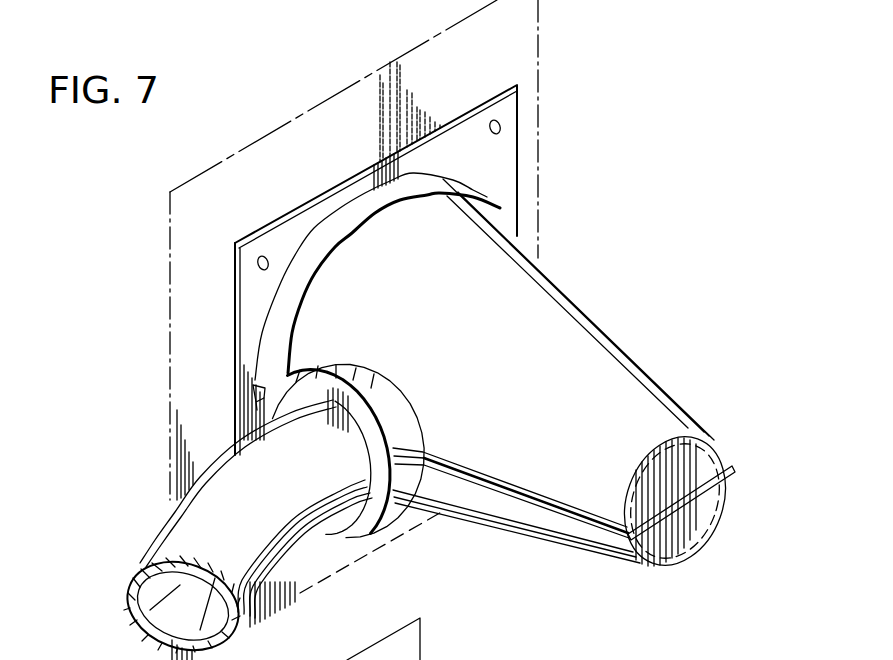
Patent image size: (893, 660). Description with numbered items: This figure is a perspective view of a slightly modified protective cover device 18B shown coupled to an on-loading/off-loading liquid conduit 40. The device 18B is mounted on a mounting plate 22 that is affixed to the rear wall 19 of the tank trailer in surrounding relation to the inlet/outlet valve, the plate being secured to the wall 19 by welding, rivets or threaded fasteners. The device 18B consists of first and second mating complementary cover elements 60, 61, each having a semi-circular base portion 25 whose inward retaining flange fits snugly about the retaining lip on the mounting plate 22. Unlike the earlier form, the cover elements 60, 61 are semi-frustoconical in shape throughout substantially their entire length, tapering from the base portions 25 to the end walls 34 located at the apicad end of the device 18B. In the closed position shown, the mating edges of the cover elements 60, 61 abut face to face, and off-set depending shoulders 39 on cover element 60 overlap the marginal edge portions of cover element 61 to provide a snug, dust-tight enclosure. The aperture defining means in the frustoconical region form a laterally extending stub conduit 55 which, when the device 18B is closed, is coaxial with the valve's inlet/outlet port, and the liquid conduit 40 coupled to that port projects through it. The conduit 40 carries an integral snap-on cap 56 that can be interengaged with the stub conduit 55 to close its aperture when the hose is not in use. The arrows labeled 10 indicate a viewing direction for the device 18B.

The section line / viewing direction 10 is at (160, 200).
The rear wall 19 is at (517, 43).
The mounting plate 22 is at (510, 157).
The semi-circular base portion 25 is at (367, 207).
The first cover element 60 is at (590, 337).
The end wall 34 is at (725, 470).
The off-set depending shoulders 39 is at (635, 497).
The second cover element 61 is at (590, 540).
The stub conduit 55 is at (403, 422).
The snap-on cap 56 is at (372, 530).
The liquid conduit 40 is at (173, 532).
The protective cover device 18B is at (573, 255).